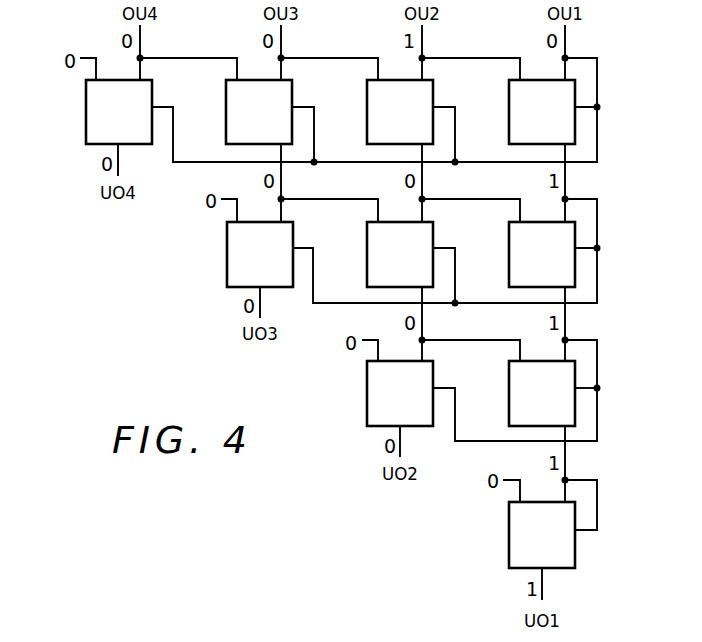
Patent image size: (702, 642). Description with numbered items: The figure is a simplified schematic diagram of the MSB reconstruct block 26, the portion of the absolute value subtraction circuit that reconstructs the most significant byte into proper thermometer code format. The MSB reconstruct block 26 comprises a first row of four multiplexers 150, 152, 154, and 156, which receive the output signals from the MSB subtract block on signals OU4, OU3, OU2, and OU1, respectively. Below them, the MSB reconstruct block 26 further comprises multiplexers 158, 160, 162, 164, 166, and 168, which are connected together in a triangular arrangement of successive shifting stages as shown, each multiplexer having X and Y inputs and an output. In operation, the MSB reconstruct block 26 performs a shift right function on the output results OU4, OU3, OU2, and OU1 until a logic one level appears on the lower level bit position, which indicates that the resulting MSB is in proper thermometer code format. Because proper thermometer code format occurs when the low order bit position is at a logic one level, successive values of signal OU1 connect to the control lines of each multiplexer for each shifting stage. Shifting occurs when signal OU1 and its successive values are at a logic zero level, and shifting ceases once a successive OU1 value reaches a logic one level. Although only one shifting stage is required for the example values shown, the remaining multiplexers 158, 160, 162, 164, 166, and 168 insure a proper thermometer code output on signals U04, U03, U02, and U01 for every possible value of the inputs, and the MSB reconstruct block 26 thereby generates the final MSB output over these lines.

The MSB reconstruct block 26 is at (133, 343).
The multiplexer 150 is at (86, 95).
The multiplexer 152 is at (226, 95).
The multiplexer 154 is at (367, 95).
The multiplexer 156 is at (509, 95).
The multiplexer 158 is at (227, 237).
The multiplexer 160 is at (367, 237).
The multiplexer 162 is at (509, 237).
The multiplexer 164 is at (367, 377).
The multiplexer 166 is at (509, 377).
The multiplexer 168 is at (509, 528).